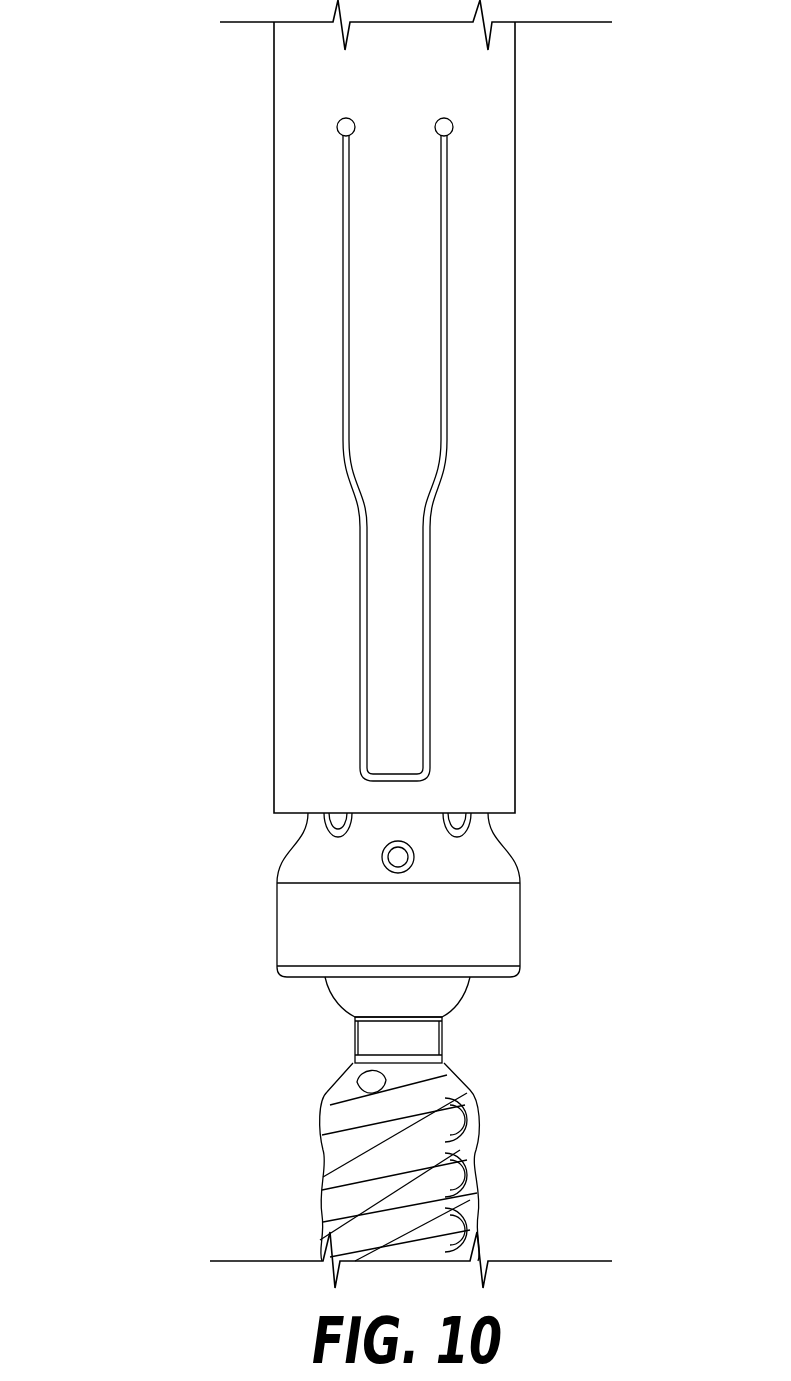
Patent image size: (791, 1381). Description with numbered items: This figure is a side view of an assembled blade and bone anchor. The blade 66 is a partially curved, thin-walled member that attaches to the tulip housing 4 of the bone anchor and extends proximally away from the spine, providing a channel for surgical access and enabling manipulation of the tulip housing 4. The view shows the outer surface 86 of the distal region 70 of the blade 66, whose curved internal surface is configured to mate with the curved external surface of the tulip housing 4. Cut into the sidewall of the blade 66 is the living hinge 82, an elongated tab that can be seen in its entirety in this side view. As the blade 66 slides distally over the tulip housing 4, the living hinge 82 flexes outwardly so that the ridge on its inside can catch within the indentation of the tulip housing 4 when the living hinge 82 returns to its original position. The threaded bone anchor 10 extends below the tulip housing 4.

The first blade 66 is at (166, 27).
The distal region 70 is at (552, 171).
The living hinge 82 is at (403, 332).
The outer surface 86 is at (473, 694).
The tulip housing 4 is at (548, 906).
The threaded anchor 10 is at (540, 1142).